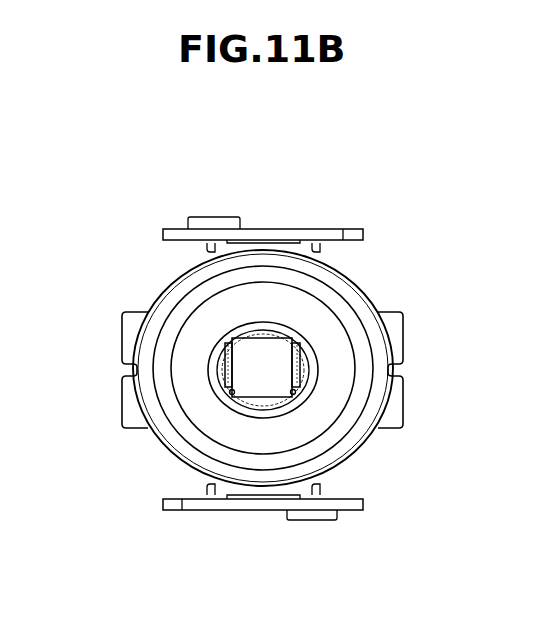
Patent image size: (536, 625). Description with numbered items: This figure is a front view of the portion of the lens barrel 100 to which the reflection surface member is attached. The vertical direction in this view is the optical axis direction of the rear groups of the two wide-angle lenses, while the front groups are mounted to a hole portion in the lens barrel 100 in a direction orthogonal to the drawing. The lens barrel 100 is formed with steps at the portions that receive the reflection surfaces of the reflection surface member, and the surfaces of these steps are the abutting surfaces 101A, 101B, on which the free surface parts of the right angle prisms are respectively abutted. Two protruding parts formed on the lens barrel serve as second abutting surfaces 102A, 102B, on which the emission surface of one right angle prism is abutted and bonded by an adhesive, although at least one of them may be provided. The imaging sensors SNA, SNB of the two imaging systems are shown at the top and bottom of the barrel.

The lens barrel 100 is at (378, 338).
The abutting surface 101A is at (224, 368).
The abutting surface 101B is at (302, 367).
The second abutting surface 102A is at (230, 389).
The second abutting surface 102B is at (298, 392).
The imaging sensor SNA is at (258, 235).
The imaging sensor SNB is at (258, 505).